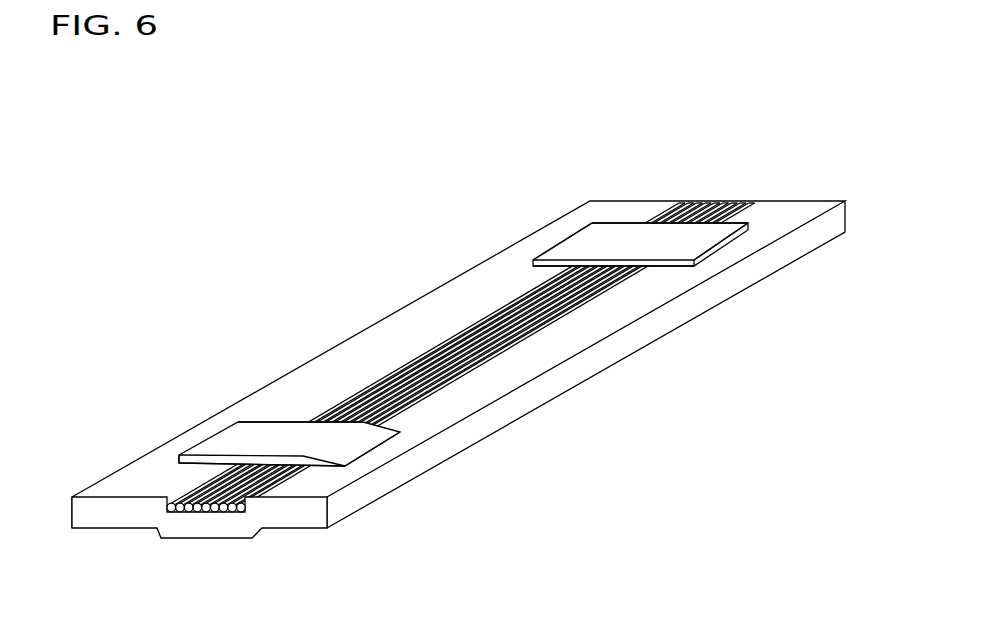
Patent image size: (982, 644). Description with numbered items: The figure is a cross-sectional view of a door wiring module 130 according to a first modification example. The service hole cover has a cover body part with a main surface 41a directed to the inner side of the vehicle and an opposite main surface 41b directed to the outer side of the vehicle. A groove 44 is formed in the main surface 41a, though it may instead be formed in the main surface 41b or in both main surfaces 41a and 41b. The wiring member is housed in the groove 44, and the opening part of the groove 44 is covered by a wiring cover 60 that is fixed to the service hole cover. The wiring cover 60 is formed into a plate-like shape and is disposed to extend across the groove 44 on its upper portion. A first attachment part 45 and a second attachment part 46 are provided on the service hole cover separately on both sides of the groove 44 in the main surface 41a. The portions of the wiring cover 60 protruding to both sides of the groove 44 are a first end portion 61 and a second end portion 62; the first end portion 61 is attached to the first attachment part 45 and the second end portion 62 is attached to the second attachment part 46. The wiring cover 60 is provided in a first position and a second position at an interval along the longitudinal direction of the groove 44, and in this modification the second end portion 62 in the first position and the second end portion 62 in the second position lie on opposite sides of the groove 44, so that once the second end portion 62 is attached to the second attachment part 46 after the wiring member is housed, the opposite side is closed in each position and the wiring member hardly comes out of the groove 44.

The door wiring module 130 is at (435, 346).
The main surface 41a is at (110, 489).
The main surface 41b is at (107, 528).
The groove 44 is at (390, 397).
The first attachment part 45 is at (373, 445).
The second attachment part 46 is at (183, 470).
The wiring cover 60 is at (265, 414).
The first end portion 61 is at (362, 452).
The second end portion 62 is at (228, 440).